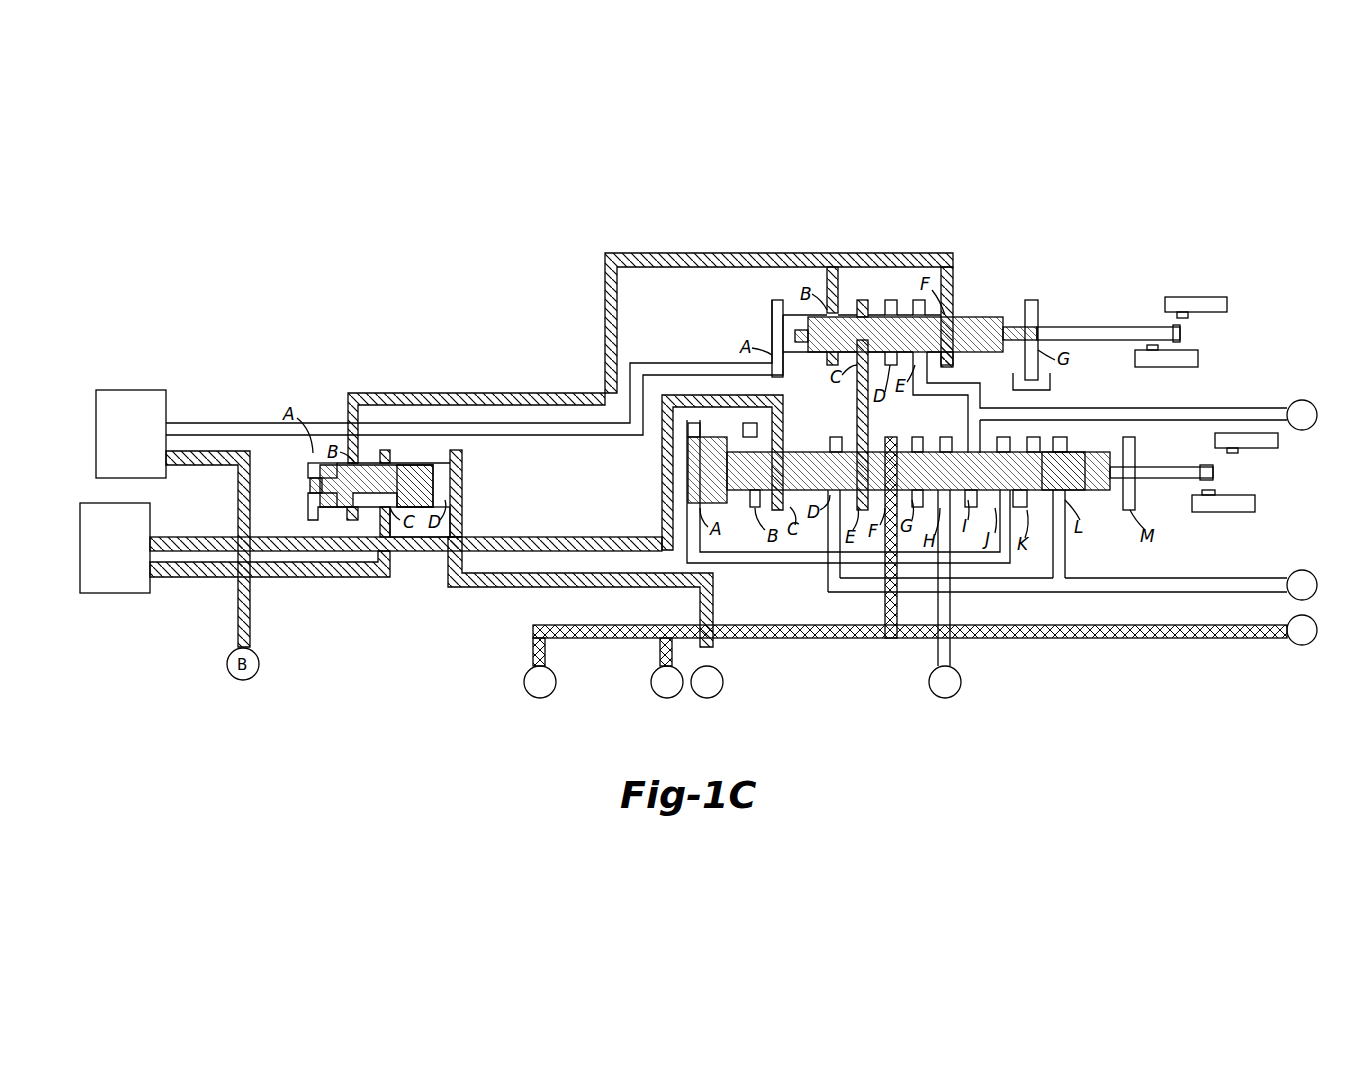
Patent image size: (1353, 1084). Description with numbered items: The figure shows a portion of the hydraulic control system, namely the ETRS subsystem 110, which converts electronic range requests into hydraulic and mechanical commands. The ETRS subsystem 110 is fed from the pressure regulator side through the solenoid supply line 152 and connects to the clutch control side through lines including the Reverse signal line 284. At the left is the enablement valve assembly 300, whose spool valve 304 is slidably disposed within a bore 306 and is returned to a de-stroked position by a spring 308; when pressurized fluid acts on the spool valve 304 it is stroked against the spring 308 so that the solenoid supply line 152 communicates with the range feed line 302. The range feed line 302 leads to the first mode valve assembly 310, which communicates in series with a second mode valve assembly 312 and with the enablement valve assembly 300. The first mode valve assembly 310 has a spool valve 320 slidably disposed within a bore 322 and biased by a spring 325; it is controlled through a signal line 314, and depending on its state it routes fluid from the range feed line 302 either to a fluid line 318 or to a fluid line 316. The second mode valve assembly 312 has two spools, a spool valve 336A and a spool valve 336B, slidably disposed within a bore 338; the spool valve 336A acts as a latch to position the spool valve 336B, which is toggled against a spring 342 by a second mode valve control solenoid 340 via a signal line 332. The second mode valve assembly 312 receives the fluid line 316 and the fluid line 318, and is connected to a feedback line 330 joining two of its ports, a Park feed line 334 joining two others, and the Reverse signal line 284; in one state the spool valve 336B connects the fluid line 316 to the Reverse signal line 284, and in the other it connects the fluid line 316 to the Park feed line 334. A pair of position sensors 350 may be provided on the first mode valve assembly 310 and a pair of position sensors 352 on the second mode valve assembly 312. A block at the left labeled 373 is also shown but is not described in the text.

The ETRS subsystem 110 is at (555, 317).
The range feed line 302 is at (790, 253).
The bore 322 is at (905, 317).
The first mode valve assembly 310 is at (988, 272).
The spool valve 320 is at (975, 313).
The spring 325 is at (1038, 305).
The position sensors 350 is at (1198, 360).
The fluid line 318 is at (1108, 345).
The spool valve 336B is at (1085, 450).
The spring 342 is at (1158, 450).
The second mode valve assembly 312 is at (1187, 437).
The hydraulic source 373 is at (131, 390).
The signal line 314 is at (668, 363).
The spool valve 304 is at (394, 449).
The fluid line 316 is at (857, 400).
The spring 308 is at (320, 476).
The bore 306 is at (433, 490).
The enablement valve assembly 300 is at (475, 483).
The spool valve 336A is at (705, 466).
The signal line 332 is at (623, 537).
The second mode valve control solenoid 340 is at (122, 594).
The solenoid supply line 152 is at (310, 578).
The feedback line 330 is at (787, 565).
The bore 338 is at (1103, 495).
The Park feed line 334 is at (1182, 578).
The position sensors 352 is at (1218, 492).
The Reverse signal line 284 is at (818, 640).